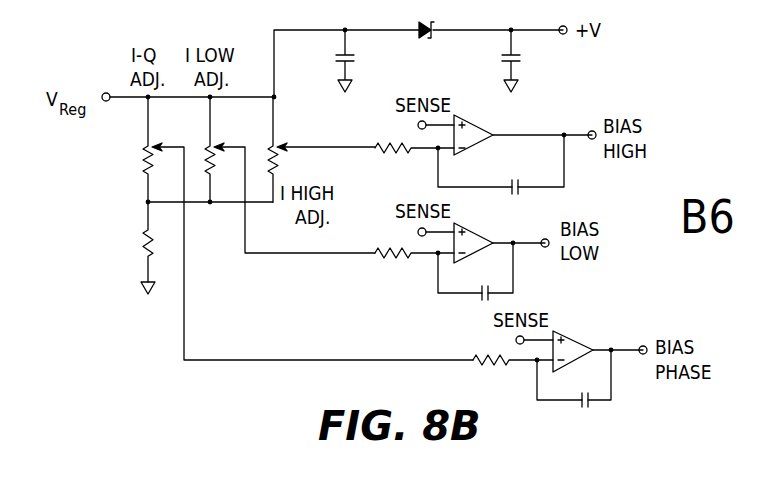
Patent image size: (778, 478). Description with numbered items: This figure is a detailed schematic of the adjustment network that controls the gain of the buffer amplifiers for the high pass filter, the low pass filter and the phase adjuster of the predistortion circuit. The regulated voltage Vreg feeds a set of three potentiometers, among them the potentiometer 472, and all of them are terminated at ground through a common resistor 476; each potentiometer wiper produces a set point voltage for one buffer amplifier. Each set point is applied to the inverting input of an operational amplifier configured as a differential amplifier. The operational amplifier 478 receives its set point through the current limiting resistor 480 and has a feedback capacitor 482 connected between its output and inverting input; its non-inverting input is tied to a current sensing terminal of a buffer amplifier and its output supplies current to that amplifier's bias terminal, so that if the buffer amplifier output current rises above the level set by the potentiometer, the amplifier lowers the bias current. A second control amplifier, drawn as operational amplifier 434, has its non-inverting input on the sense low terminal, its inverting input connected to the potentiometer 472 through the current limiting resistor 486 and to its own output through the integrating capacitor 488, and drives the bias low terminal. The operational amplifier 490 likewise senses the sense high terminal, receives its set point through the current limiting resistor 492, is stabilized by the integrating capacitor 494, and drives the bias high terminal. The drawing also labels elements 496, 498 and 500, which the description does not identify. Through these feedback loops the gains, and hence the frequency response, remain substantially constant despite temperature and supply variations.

The potentiometer 472 is at (214, 150).
The common resistor 476 is at (144, 246).
The operational amplifier 478 is at (474, 124).
The current limiting resistor 480 is at (385, 152).
The feedback capacitor 482 is at (520, 184).
The bias low operational amplifier 434 is at (478, 233).
The current limiting resistor 486 is at (380, 260).
The integrating capacitor 488 is at (480, 294).
The operational amplifier 490 is at (146, 150).
The current limiting resistor 492 is at (488, 362).
The integrating capacitor 494 is at (283, 145).
The capacitor 496 is at (340, 58).
The diode 498 is at (434, 40).
The capacitor 500 is at (517, 60).